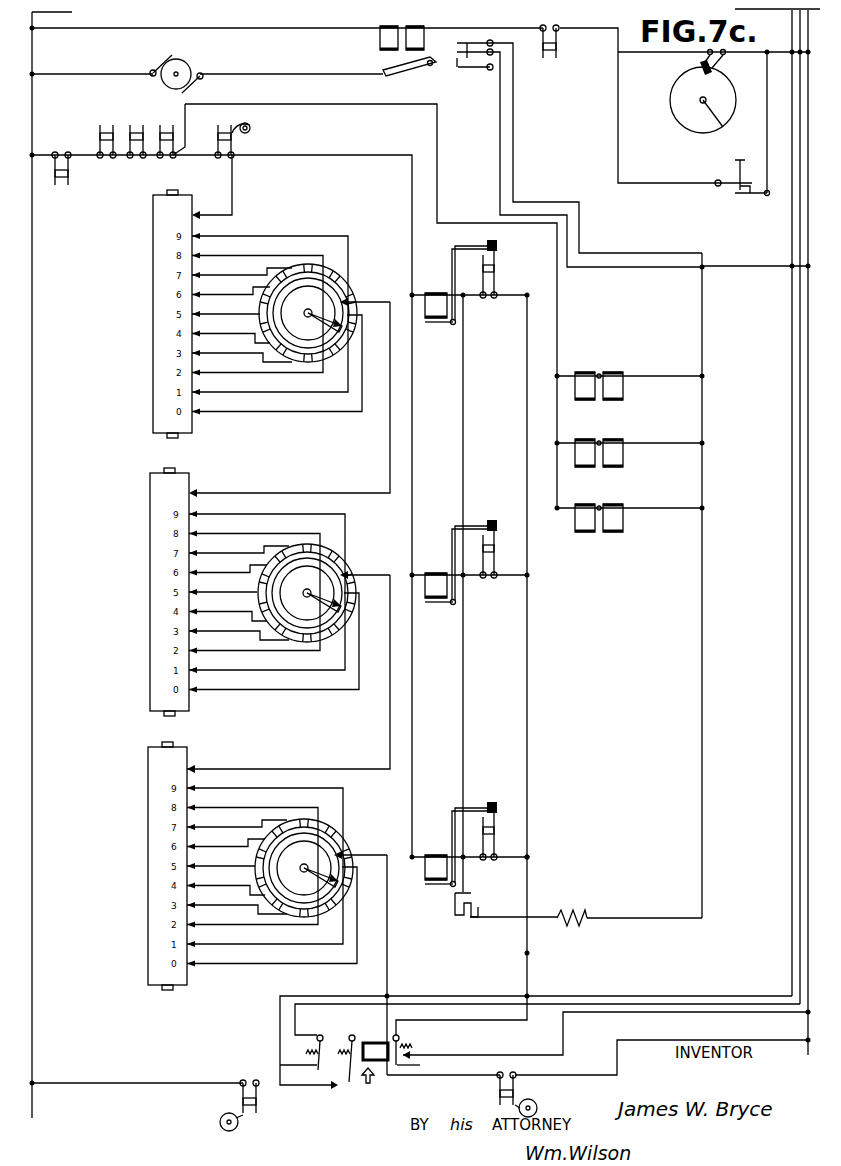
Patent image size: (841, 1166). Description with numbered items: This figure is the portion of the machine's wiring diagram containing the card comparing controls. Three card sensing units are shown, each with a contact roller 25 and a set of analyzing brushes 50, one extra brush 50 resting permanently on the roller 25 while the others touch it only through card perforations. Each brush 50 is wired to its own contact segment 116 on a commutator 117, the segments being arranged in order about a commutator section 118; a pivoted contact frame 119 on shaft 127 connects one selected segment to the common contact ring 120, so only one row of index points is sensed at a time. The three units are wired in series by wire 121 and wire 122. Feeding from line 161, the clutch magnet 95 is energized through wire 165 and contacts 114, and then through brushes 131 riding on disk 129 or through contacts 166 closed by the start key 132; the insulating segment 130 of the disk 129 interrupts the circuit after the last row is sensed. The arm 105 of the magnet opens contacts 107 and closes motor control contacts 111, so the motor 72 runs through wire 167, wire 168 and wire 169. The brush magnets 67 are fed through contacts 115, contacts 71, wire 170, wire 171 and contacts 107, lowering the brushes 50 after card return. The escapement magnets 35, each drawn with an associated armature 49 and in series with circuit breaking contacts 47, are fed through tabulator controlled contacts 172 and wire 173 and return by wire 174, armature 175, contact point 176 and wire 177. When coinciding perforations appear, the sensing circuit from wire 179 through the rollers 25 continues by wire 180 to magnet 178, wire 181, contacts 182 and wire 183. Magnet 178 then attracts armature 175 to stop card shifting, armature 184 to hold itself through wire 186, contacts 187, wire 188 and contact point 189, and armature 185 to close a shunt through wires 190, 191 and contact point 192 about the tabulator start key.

The contact roller 25 is at (153, 395).
The escapement magnets 35 is at (430, 305).
The circuit breaking contacts 47 is at (496, 265).
The relay armature 49 is at (452, 258).
The analyzing brushes 50 is at (198, 212).
The brush magnets 67 is at (620, 382).
The contacts 71 is at (168, 127).
The motor 72 is at (196, 66).
The magnet 95 is at (380, 42).
The arm 105 is at (392, 76).
The contacts 107 is at (474, 42).
The motor control contacts 111 is at (456, 68).
The contacts 114 is at (565, 64).
The contacts 115 is at (62, 188).
The contact segment 116 is at (332, 273).
The commutator 117 is at (299, 601).
The commutator section 118 is at (312, 264).
The contact frame 119 is at (332, 326).
The common contact ring 120 is at (288, 282).
The connection wire 121 is at (390, 446).
The wire 122 is at (390, 740).
The shaft 127 is at (726, 120).
The disk 129 is at (686, 114).
The insulating segment 130 is at (700, 68).
The brushes 131 is at (723, 56).
The start key 132 is at (732, 170).
The line 161 is at (49, 565).
The wire 165 is at (170, 30).
The contacts 166 is at (732, 195).
The wire 167 is at (74, 77).
The wire 168 is at (313, 74).
The wire 169 is at (732, 266).
The wire 170 is at (352, 105).
The wire 171 is at (705, 338).
The tabulator controlled contacts 172 is at (246, 123).
The wire 173 is at (412, 200).
The wire 174 is at (527, 953).
The armature 175 is at (423, 1063).
The contact point 176 is at (412, 1050).
The wire 177 is at (484, 1058).
The magnet 178 is at (368, 1043).
The wire 179 is at (234, 190).
The wire 180 is at (395, 940).
The wire 181 is at (436, 1078).
The tabulator controlled contacts 182 is at (505, 1104).
The wire 183 is at (588, 1078).
The armature 184 is at (350, 1083).
The armature 185 is at (280, 1067).
The wire 186 is at (120, 1090).
The tabulator controlled contacts 187 is at (250, 1124).
The wire 188 is at (268, 1090).
The contact point 189 is at (370, 1084).
The wire 190 is at (676, 1000).
The wire 191 is at (600, 1004).
The contact point 192 is at (336, 1062).